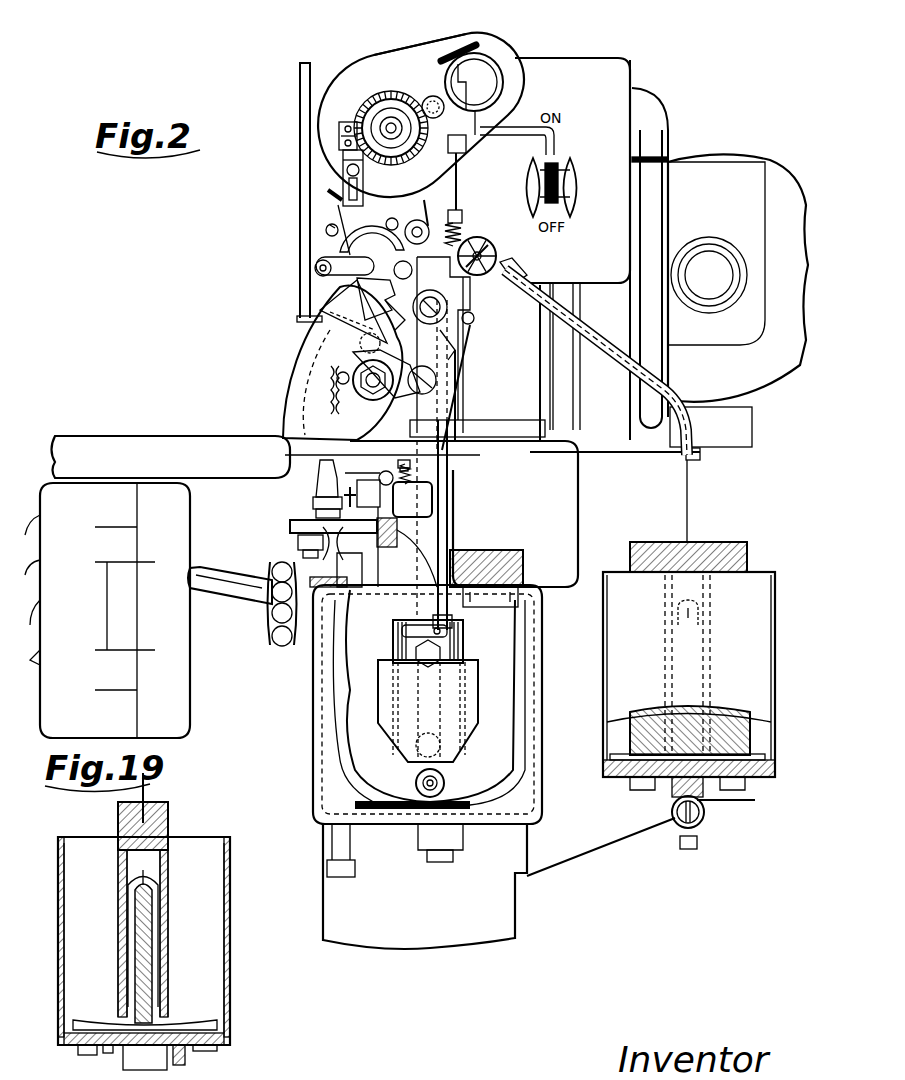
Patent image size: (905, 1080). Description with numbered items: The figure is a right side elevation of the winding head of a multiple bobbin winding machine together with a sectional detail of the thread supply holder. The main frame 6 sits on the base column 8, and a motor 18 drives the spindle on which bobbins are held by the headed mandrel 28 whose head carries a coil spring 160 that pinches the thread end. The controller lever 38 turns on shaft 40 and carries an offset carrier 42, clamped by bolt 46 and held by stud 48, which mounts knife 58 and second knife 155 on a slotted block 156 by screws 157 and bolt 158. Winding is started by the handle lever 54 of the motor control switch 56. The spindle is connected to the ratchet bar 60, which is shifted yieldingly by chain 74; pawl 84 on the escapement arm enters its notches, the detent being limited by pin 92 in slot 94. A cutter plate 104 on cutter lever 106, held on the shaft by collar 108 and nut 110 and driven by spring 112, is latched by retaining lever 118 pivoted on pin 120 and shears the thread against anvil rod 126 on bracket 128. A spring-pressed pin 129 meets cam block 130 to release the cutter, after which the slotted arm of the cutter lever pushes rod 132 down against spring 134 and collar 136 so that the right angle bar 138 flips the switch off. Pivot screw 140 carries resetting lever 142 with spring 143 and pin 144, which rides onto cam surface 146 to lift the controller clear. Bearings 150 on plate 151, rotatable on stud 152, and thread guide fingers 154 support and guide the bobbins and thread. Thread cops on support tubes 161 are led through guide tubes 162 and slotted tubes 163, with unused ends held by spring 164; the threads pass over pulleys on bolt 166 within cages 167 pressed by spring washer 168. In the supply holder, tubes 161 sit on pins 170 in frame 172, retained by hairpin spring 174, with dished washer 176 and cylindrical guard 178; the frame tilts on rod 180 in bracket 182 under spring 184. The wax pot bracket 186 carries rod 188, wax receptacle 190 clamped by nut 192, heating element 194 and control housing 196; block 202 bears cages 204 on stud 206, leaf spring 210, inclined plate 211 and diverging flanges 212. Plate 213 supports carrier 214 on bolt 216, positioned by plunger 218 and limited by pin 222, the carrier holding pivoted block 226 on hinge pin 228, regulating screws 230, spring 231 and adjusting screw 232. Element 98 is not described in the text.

In FIG. 2, the main frame 6 is at (356, 70).
In FIG. 2, the base column 8 is at (425, 886).
In FIG. 2, the motor 18 is at (738, 277).
In FIG. 2, the headed mandrel 28 is at (388, 128).
In FIG. 2, the controller lever 38 is at (345, 266).
In FIG. 2, the shaft 40 is at (353, 395).
In FIG. 2, the offset carrier 42 is at (338, 206).
In FIG. 2, the bolt 46 is at (330, 193).
In FIG. 2, the stud 48 is at (330, 227).
In FIG. 2, the handle lever 54 is at (556, 188).
In FIG. 2, the motor control switch 56 is at (632, 66).
In FIG. 2, the knife 58 is at (339, 128).
In FIG. 2, the ratchet bar 60 is at (393, 219).
In FIG. 2, the chain 74 is at (318, 422).
In FIG. 2, the pawl 84 is at (357, 240).
In FIG. 2, the pin 92 is at (402, 262).
In FIG. 2, the slot 94 is at (421, 243).
In FIG. 2, the bracket 98 is at (503, 577).
In FIG. 2, the cutter plate 104 is at (363, 285).
In FIG. 2, the cutter lever 106 is at (322, 309).
In FIG. 2, the collar 108 is at (337, 377).
In FIG. 2, the nut 110 is at (362, 383).
In FIG. 2, the cutter spring 112 is at (355, 352).
In FIG. 2, the cutter retaining lever 118 is at (315, 265).
In FIG. 2, the pin 120 is at (316, 272).
In FIG. 2, the anvil rod 126 is at (473, 321).
In FIG. 2, the horizontal bracket 128 is at (440, 345).
In FIG. 2, the spring-pressed pin 129 is at (378, 206).
In FIG. 2, the cam block 130 is at (426, 210).
In FIG. 2, the sliding rod 132 is at (458, 373).
In FIG. 2, the compression spring 134 is at (463, 214).
In FIG. 2, the collar 136 is at (459, 203).
In FIG. 2, the right angle bar 138 is at (516, 134).
In FIG. 2, the pivot screw 140 is at (448, 392).
In FIG. 2, the resetting lever 142 is at (342, 365).
In FIG. 2, the spring 143 is at (434, 387).
In FIG. 2, the pin 144 is at (360, 344).
In FIG. 2, the inclined cam surface 146 is at (393, 327).
In FIG. 2, the supporting bearings 150 is at (500, 64).
In FIG. 2, the plate 151 is at (427, 56).
In FIG. 2, the stud 152 is at (433, 96).
In FIG. 2, the thread guide fingers 154 is at (470, 46).
In FIG. 2, the second knife 155 is at (343, 152).
In FIG. 2, the slotted block 156 is at (345, 163).
In FIG. 2, the screws 157 is at (341, 140).
In FIG. 2, the bolt 158 is at (349, 183).
In FIG. 2, the coil spring 160 is at (376, 118).
In FIG. 2, the support tube 161 is at (712, 592).
In FIG. 19, the support tube 161 is at (168, 828).
In FIG. 2, the guide tubes 162 is at (688, 428).
In FIG. 2, the slotted tubes 163 is at (449, 515).
In FIG. 2, the spring 164 is at (464, 331).
In FIG. 2, the bolt 166 is at (485, 243).
In FIG. 2, the thread retaining cage 167 is at (492, 252).
In FIG. 2, the spring washer 168 is at (514, 266).
In FIG. 2, the pins 170 is at (700, 608).
In FIG. 19, the pins 170 is at (149, 920).
In FIG. 2, the frame 172 is at (745, 772).
In FIG. 19, the frame 172 is at (212, 1046).
In FIG. 2, the hairpin spring 174 is at (707, 704).
In FIG. 19, the hairpin spring 174 is at (160, 975).
In FIG. 2, the dished washer 176 is at (612, 748).
In FIG. 19, the dished washer 176 is at (200, 1014).
In FIG. 2, the cylindrical guard 178 is at (604, 683).
In FIG. 19, the cylindrical guard 178 is at (229, 940).
In FIG. 2, the horizontal rod 180 is at (672, 815).
In FIG. 2, the bracket 182 is at (630, 845).
In FIG. 2, the spring 184 is at (712, 803).
In FIG. 2, the bracket 186 is at (337, 563).
In FIG. 2, the vertical rod 188 is at (333, 848).
In FIG. 2, the wax receptacle 190 is at (325, 683).
In FIG. 2, the clamp nut 192 is at (272, 633).
In FIG. 2, the heating element 194 is at (367, 700).
In FIG. 2, the housing 196 is at (579, 525).
In FIG. 2, the block 202 is at (407, 622).
In FIG. 2, the split retaining cages 204 is at (444, 786).
In FIG. 2, the stud 206 is at (437, 782).
In FIG. 2, the leaf spring 210 is at (408, 629).
In FIG. 2, the inclined plate 211 is at (475, 688).
In FIG. 2, the diverging flanges 212 is at (460, 632).
In FIG. 2, the plate 213 is at (296, 524).
In FIG. 2, the carrier 214 is at (430, 493).
In FIG. 2, the vertical bolt 216 is at (313, 500).
In FIG. 2, the spring-pressed plunger 218 is at (318, 488).
In FIG. 2, the pin 222 is at (316, 513).
In FIG. 2, the pivoted block 226 is at (411, 478).
In FIG. 2, the hinge pin 228 is at (386, 471).
In FIG. 2, the regulating screws 230 is at (352, 505).
In FIG. 2, the spring 231 is at (409, 472).
In FIG. 2, the adjusting screw 232 is at (406, 461).